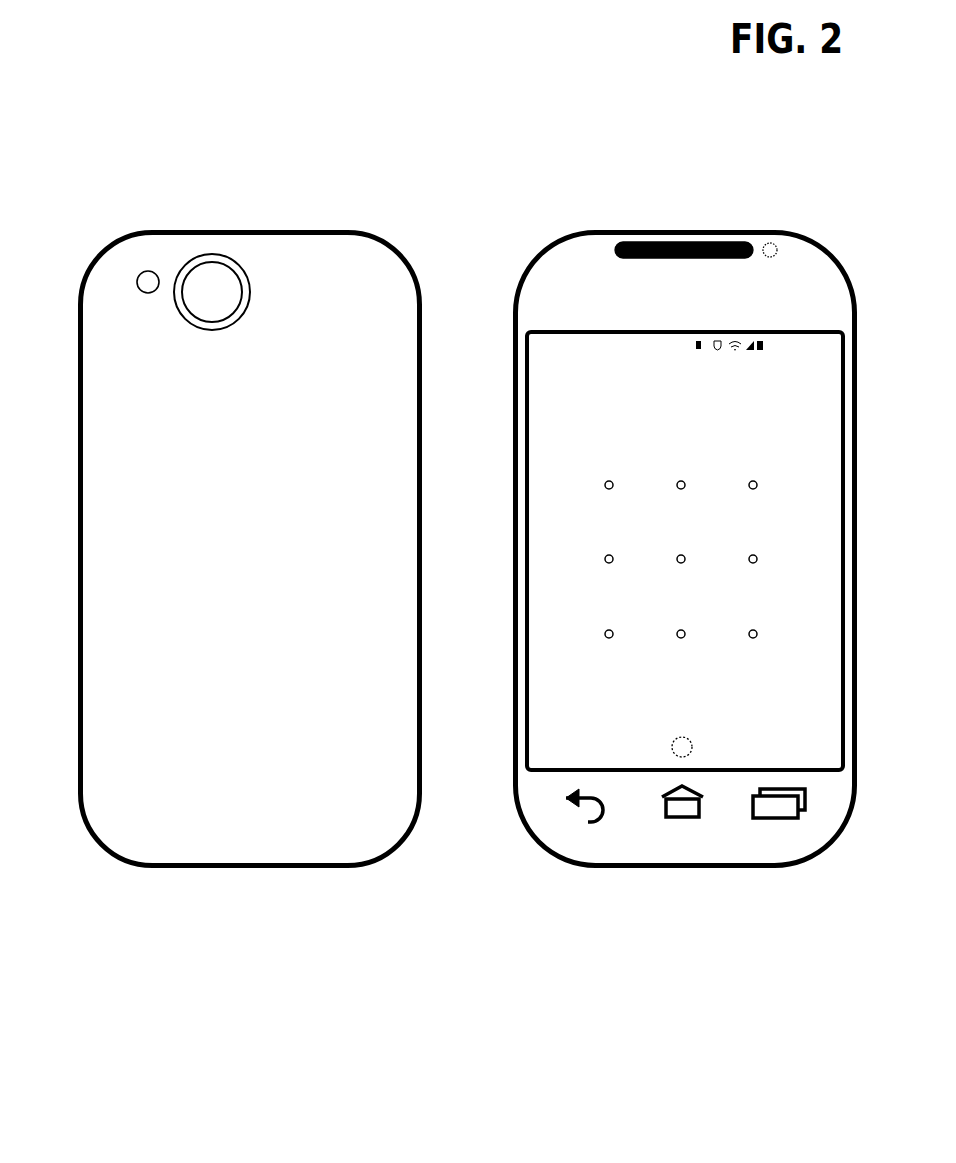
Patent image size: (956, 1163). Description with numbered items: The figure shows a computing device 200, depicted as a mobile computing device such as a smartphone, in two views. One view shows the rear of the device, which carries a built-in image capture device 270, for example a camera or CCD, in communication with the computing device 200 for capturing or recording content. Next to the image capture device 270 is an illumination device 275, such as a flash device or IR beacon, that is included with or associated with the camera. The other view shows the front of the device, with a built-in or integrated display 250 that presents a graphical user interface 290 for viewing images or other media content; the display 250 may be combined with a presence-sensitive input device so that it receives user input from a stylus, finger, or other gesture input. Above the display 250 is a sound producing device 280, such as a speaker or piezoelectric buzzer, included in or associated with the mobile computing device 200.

The computing device 200 is at (250, 872).
The display 250 is at (556, 775).
The image capture device 270 is at (190, 256).
The illumination device 275 is at (143, 295).
The sound producing device 280 is at (612, 241).
The graphical user interface 290 is at (563, 678).